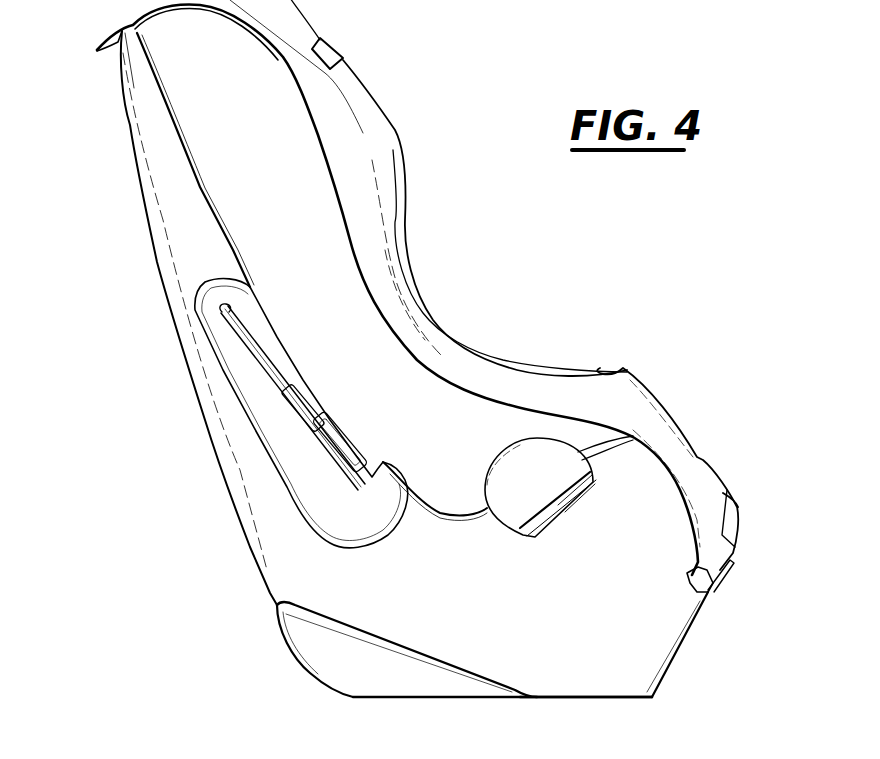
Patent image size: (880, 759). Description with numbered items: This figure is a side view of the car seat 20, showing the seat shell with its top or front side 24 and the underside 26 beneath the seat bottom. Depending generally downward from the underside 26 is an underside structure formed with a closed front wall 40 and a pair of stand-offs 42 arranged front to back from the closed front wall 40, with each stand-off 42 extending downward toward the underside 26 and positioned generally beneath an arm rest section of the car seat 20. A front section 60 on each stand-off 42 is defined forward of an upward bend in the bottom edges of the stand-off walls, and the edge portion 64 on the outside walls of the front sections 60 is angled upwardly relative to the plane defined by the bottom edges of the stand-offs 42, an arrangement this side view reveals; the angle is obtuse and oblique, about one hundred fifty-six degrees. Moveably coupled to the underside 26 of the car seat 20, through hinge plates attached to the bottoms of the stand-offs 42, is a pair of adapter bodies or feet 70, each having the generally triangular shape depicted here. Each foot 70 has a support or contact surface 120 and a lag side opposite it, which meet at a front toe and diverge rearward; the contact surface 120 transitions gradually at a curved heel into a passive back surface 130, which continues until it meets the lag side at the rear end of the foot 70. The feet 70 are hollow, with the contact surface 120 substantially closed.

The car seat 20 is at (546, 294).
The top or front side 24 is at (432, 272).
The underside 26 is at (161, 338).
The stand-offs 42 is at (405, 604).
The passive back surface 130 is at (287, 637).
The adapter bodies or feet 70 is at (341, 660).
The support or contact surface 120 is at (417, 697).
The edge portion on the outside walls 64 is at (587, 697).
The front section 60 is at (597, 668).
The closed front wall 40 is at (683, 643).